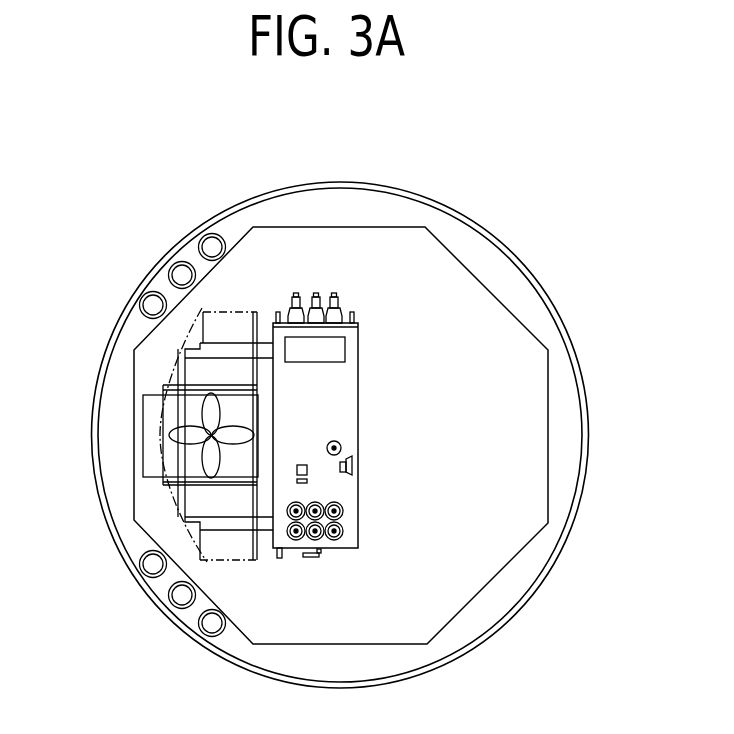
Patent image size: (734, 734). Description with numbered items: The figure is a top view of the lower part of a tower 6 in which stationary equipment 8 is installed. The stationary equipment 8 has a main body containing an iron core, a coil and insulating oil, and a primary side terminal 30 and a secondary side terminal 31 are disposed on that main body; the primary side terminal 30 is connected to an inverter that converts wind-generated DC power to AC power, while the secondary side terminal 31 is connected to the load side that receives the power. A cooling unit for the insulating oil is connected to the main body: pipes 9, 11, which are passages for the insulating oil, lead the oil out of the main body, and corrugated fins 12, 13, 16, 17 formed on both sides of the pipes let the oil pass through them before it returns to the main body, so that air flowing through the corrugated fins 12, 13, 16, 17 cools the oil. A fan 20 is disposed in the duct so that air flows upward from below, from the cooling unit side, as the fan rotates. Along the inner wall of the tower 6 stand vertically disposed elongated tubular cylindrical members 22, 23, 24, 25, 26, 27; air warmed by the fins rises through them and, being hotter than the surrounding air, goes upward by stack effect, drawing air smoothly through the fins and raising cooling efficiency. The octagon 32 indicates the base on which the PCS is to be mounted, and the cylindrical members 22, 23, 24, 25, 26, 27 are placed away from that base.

The tower 6 is at (472, 223).
The stationary equipment 8 is at (340, 393).
The pipe 9 is at (227, 522).
The pipe 11 is at (228, 350).
The corrugated fin 12 is at (215, 545).
The corrugated fin 13 is at (195, 498).
The corrugated fin 16 is at (195, 372).
The corrugated fin 17 is at (218, 327).
The fan 20 is at (168, 427).
The cylindrical member 22 is at (199, 625).
The cylindrical member 23 is at (170, 596).
The cylindrical member 24 is at (140, 561).
The cylindrical member 25 is at (140, 306).
The cylindrical member 26 is at (169, 276).
The cylindrical member 27 is at (199, 247).
The primary side terminal 30 is at (345, 510).
The secondary side terminal 31 is at (340, 304).
The octagon 32 is at (548, 483).